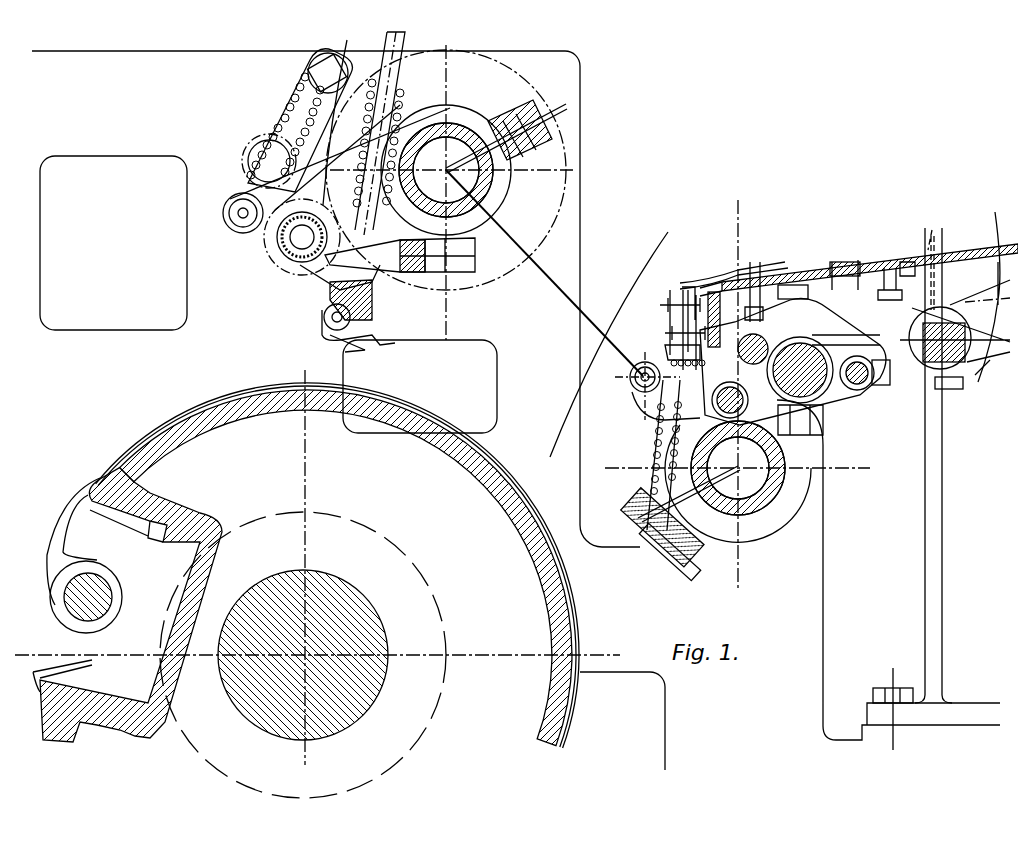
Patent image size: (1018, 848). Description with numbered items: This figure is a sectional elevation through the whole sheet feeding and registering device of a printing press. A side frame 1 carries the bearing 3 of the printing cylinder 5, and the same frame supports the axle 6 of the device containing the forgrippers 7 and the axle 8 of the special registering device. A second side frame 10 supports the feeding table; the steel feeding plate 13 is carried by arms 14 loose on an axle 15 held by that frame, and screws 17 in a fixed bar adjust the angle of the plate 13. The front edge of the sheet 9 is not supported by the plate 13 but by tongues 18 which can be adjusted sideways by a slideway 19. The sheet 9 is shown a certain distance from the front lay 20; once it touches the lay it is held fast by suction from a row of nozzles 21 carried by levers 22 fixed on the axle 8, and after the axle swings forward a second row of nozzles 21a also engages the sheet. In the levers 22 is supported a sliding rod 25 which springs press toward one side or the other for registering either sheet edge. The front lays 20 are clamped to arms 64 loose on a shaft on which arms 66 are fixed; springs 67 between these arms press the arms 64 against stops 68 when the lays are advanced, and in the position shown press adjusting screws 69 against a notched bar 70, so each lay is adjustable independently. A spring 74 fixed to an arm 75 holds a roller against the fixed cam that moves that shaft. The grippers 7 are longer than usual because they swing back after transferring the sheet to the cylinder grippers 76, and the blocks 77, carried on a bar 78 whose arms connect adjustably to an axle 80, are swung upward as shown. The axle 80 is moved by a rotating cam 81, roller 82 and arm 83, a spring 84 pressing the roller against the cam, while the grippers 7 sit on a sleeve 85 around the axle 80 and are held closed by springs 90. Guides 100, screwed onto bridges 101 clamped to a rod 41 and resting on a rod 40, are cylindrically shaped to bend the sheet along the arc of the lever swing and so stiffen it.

The side frame 1 is at (570, 238).
The bearing 3 is at (420, 596).
The printing cylinder 5 is at (568, 613).
The axle 6 is at (437, 128).
The forgripper 7 is at (340, 333).
The axle 8 is at (740, 470).
The sheet 9 is at (830, 264).
The side frame 10 is at (941, 489).
The steel feeding plate 13 is at (981, 289).
The arm 14 is at (937, 267).
The axle 15 is at (986, 372).
The screw 17 is at (899, 282).
The tongue 18 is at (800, 274).
The slideway 19 is at (900, 262).
The front lay 20 is at (715, 279).
The suction nozzle 21 is at (735, 276).
The second row of nozzles 21a is at (802, 288).
The lever 22 is at (795, 466).
The sliding rod 25 is at (818, 392).
The rod 40 is at (758, 338).
The rod 41 is at (860, 380).
The arm 64 is at (717, 297).
The arm 66 is at (645, 402).
The spring 67 is at (630, 377).
The stop 68 is at (710, 345).
The adjusting screw 69 is at (700, 304).
The bar 70 is at (793, 358).
The spring 74 is at (652, 470).
The arm 75 is at (712, 408).
The cylinder gripper 76 is at (83, 490).
The block 77 is at (372, 323).
The bar 78 is at (374, 288).
The axle 80 is at (305, 268).
The rotating cam 81 is at (500, 96).
The roller 82 is at (248, 168).
The arm 83 is at (292, 175).
The spring 84 is at (370, 145).
The sleeve 85 is at (243, 220).
The spring 90 is at (290, 115).
The guide 100 is at (754, 290).
The bridge 101 is at (800, 340).